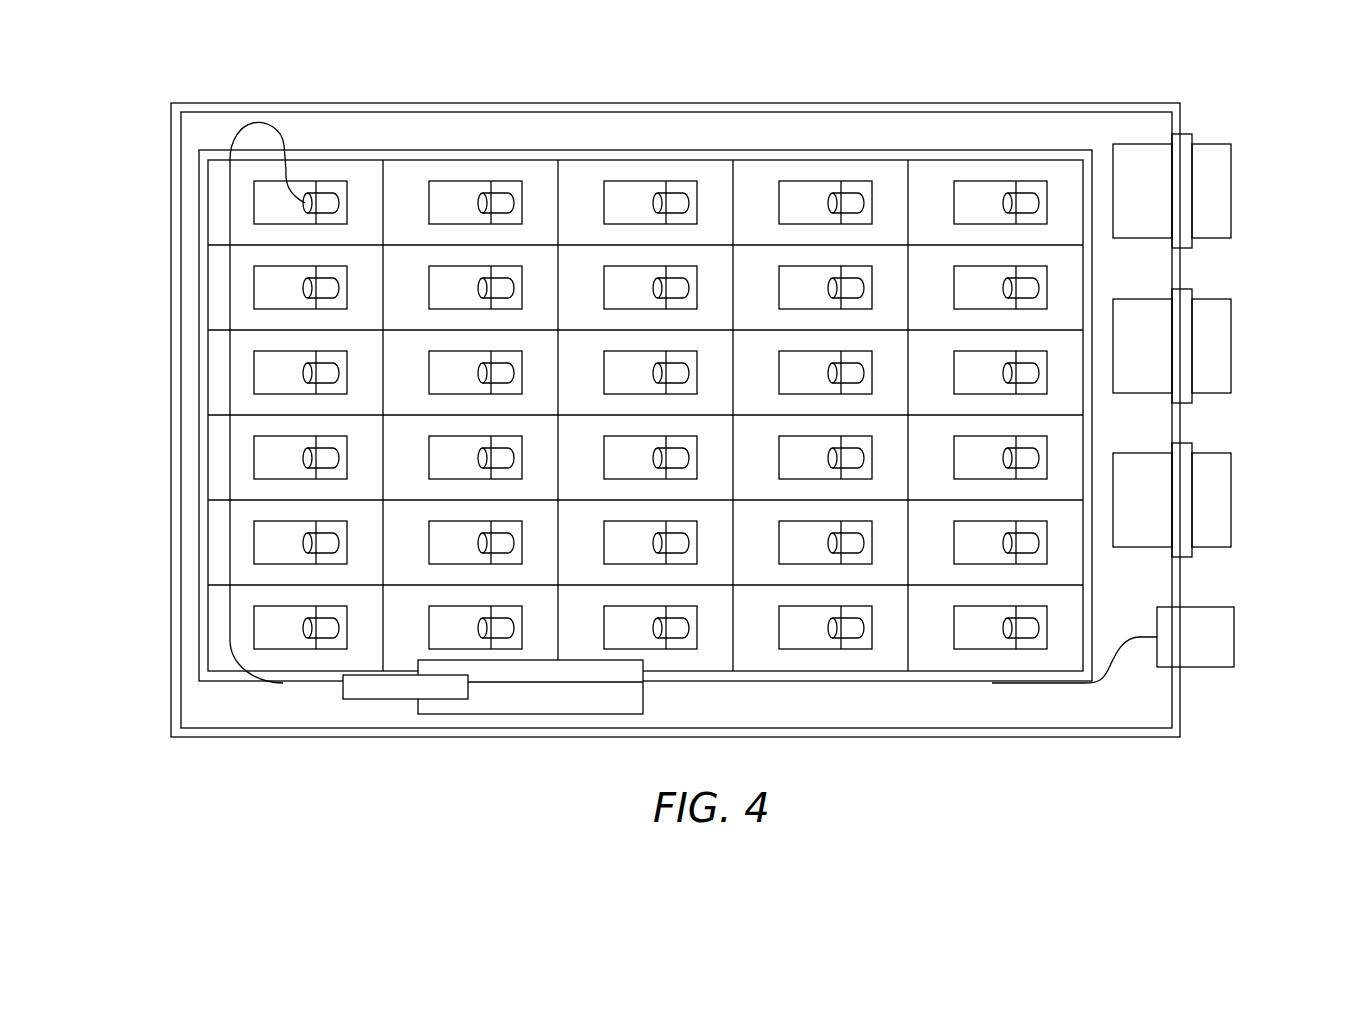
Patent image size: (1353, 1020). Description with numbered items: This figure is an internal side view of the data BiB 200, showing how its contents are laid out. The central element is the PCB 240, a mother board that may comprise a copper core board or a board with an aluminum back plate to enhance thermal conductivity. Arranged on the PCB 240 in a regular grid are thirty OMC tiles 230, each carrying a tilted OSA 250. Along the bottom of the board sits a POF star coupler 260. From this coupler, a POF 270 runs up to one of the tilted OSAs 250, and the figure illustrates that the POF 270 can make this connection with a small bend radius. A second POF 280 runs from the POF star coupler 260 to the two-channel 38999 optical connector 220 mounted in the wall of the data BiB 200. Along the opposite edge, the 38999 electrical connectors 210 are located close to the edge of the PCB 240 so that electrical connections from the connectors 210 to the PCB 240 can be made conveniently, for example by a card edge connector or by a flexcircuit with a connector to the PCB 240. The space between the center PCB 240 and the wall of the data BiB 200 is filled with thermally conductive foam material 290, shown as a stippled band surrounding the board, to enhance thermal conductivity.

The data BiB 200 is at (160, 450).
The 38999 electrical connectors 210 is at (1242, 197).
The 2-channel 38999 optical connector 220 is at (1235, 642).
The OMC tiles 230 is at (710, 205).
The PCB 240 is at (1092, 411).
The tilted OSAs 250 is at (282, 137).
The POF star coupler 260 is at (523, 715).
The POF 270 is at (283, 683).
The POF 280 is at (992, 683).
The thermally conductive foam material 290 is at (198, 128).